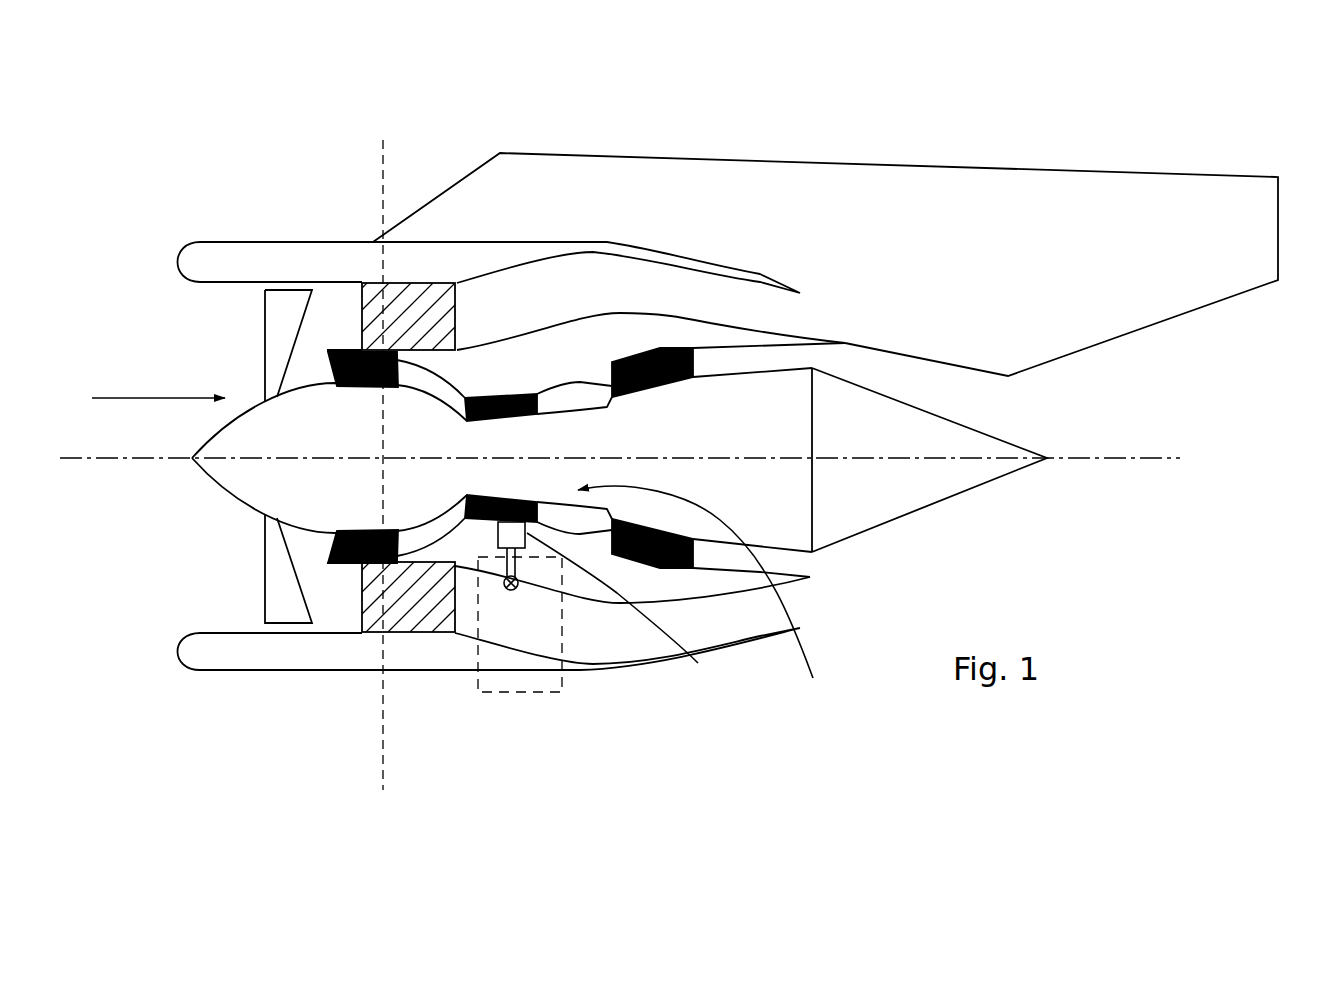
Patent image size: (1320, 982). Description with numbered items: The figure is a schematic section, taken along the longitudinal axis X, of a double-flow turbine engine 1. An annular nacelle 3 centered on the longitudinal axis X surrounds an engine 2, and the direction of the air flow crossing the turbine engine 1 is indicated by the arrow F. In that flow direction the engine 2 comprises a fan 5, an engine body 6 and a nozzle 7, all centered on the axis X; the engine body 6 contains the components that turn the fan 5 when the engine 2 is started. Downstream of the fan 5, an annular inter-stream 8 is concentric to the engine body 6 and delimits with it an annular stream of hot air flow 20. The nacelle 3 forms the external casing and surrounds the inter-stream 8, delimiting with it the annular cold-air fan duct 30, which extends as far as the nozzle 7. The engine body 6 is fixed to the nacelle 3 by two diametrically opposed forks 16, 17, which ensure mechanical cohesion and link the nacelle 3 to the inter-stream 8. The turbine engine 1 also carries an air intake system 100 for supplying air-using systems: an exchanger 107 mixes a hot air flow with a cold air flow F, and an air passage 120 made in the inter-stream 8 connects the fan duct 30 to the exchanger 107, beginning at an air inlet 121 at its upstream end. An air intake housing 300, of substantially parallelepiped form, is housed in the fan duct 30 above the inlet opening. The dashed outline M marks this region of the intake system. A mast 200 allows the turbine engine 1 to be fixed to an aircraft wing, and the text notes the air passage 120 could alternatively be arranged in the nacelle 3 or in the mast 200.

The double-flow turbine engine 1 is at (140, 250).
The engine 2 is at (708, 593).
The nacelle 3 is at (270, 253).
The fan 5 is at (262, 592).
The engine body 6 is at (623, 363).
The nozzle 7 is at (762, 357).
The inter-stream 8 is at (797, 340).
The fork 16 is at (370, 310).
The fork 17 is at (378, 630).
The annular stream of hot air flow 20 is at (406, 380).
The fan duct 30 is at (541, 293).
The air intake system 100 is at (486, 537).
The exchanger 107 is at (636, 613).
The air passage 120 is at (524, 552).
The air inlet 121 is at (509, 591).
The mast 200 is at (1067, 170).
The air intake housing 300 is at (516, 578).
The module M is at (562, 680).
The longitudinal axis X is at (1115, 457).
The arrow F / cold air flow F is at (148, 397).